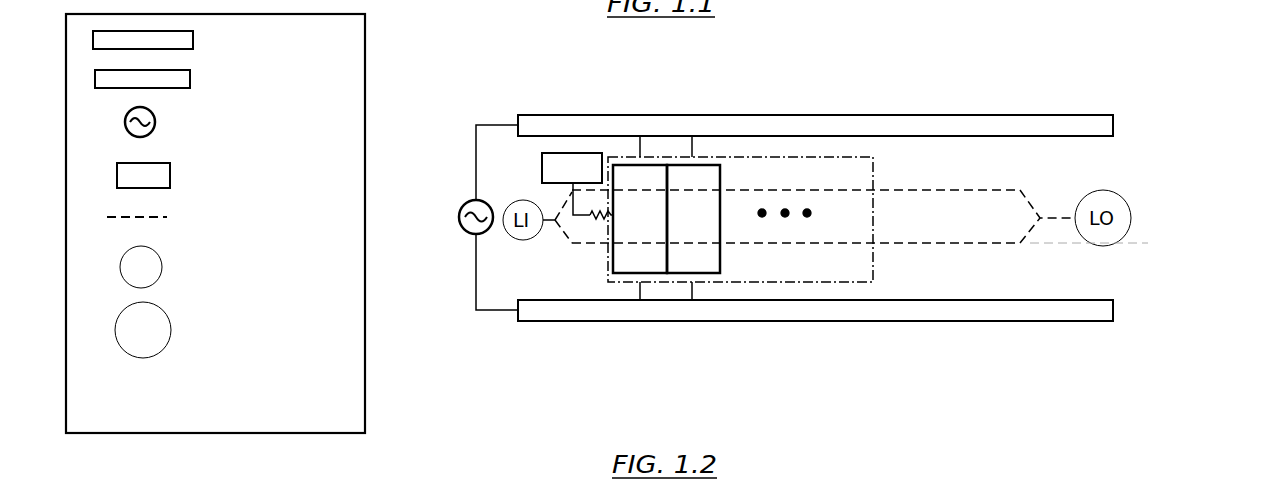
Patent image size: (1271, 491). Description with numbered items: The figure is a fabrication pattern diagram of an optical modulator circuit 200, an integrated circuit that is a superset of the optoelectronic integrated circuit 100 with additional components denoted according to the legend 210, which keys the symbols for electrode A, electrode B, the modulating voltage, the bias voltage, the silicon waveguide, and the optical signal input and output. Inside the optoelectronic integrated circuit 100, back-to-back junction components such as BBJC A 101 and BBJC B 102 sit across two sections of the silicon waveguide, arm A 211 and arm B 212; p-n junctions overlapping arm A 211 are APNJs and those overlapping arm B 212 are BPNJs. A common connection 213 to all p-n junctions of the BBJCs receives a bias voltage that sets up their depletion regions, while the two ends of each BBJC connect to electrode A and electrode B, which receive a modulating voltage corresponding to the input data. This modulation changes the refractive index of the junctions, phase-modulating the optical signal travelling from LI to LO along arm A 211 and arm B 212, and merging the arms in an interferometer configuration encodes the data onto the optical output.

The optoelectronic integrated circuit 100 is at (815, 274).
The BBJC A 101 is at (632, 167).
The BBJC B 102 is at (705, 156).
The optical modulator circuit 200 is at (1078, 43).
The legend 210 is at (277, 421).
The arm A 211 is at (924, 185).
The arm B 212 is at (925, 252).
The common connection 213 is at (583, 234).